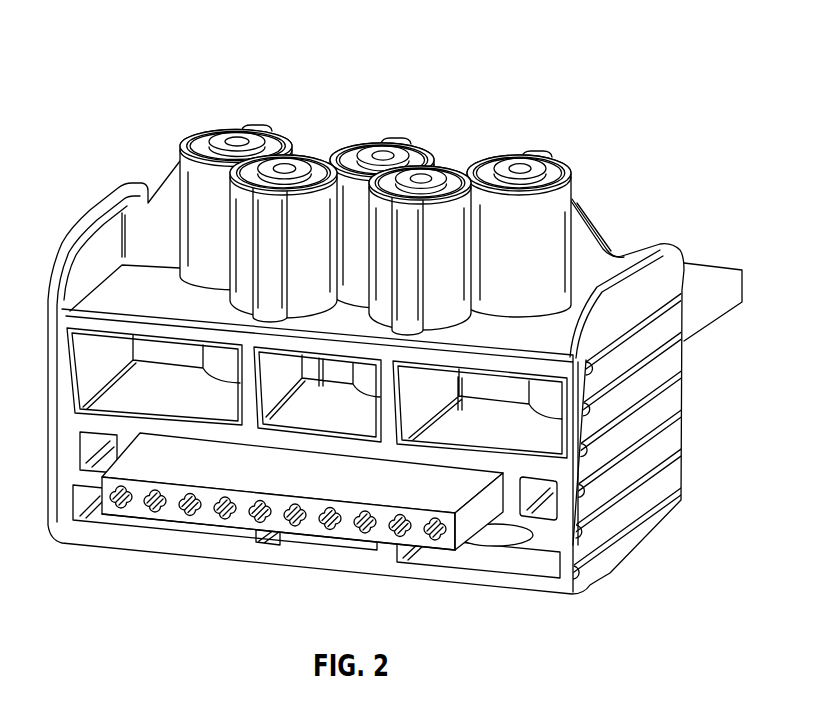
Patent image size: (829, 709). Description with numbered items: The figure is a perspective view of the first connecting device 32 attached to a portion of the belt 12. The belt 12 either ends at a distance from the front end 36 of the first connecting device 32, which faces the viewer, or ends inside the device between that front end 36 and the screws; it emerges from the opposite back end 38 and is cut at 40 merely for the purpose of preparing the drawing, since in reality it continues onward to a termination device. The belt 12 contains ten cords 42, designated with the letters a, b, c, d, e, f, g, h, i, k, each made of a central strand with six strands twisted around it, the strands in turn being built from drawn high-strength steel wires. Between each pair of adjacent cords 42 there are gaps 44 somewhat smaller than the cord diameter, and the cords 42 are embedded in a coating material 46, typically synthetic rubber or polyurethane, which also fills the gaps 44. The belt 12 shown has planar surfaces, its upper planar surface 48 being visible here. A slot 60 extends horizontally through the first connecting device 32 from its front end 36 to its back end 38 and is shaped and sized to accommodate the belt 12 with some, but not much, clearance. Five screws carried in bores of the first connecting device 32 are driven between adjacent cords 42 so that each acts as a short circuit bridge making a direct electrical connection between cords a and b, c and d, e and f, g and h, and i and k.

The belt 12 is at (350, 548).
The first connecting device 32 is at (388, 115).
The front end 36 is at (557, 505).
The back end 38 is at (676, 390).
The cut 40 is at (742, 281).
The cords 42 is at (147, 509).
The gaps 44 is at (418, 528).
The coating material 46 is at (268, 530).
The upper planar surface 48 is at (163, 437).
The slot 60 is at (497, 528).
The cord a is at (121, 486).
The cord b is at (155, 490).
The cord c is at (190, 493).
The cord d is at (225, 497).
The cord e is at (260, 500).
The cord f is at (295, 504).
The cord g is at (330, 507).
The cord h is at (365, 511).
The cord i is at (400, 514).
The cord k is at (435, 518).